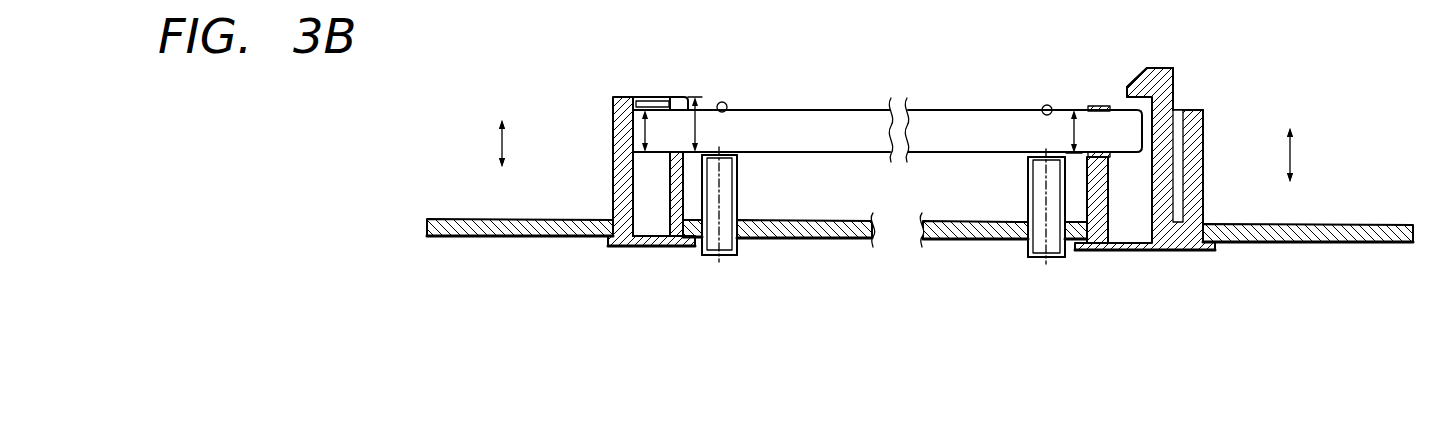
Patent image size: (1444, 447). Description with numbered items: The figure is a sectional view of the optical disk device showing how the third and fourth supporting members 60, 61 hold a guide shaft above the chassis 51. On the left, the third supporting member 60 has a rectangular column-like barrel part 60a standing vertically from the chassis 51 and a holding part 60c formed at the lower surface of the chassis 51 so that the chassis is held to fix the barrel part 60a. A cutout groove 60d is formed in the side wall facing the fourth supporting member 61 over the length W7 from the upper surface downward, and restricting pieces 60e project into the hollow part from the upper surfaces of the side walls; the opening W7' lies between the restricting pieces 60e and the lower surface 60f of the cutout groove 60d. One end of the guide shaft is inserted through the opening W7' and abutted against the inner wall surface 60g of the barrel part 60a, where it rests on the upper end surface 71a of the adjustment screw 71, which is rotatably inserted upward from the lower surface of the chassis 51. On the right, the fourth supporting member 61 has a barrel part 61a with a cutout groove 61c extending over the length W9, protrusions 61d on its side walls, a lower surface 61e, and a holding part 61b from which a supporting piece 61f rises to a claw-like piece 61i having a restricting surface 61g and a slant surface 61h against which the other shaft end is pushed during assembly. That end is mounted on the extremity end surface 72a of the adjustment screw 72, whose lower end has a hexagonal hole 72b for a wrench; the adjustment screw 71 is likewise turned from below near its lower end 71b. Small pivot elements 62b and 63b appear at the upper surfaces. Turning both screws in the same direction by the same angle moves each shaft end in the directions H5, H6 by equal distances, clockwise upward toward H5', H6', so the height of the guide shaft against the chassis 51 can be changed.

The chassis 51 is at (854, 213).
The third supporting member 60 is at (606, 140).
The barrel part 60a is at (613, 170).
The holding part 60c is at (623, 247).
The cutout groove 60d is at (683, 97).
The restricting pieces 60e is at (668, 98).
The lower surface of the cutout groove 60f is at (668, 158).
The inner wall surface 60g is at (638, 198).
The fourth supporting member 61 is at (1213, 117).
The barrel part 61a is at (1195, 200).
The holding part 61b is at (1183, 250).
The cutout groove 61c is at (1103, 106).
The protrusions 61d is at (1077, 108).
The lower surface of the cutout groove 61e is at (1106, 163).
The supporting piece 61f is at (1163, 150).
The restricting surface 61g is at (1132, 107).
The slant surface 61h is at (1151, 68).
The claw-like piece 61i is at (1175, 82).
The lever pivot pin 62b is at (728, 105).
The lever pivot pin 63b is at (1042, 106).
The adjustment screw 71 is at (746, 249).
The upper end surface 71a is at (727, 151).
The pin lower end 71b is at (715, 258).
The adjustment screw 72 is at (1021, 256).
The extremity end surface 72a is at (1035, 153).
The hexagonal hole 72b is at (1045, 262).
The length of the cutout groove W7 is at (713, 104).
The opening W7' is at (593, 111).
The length of the cutout groove W9 is at (1072, 130).
The direction of movement of the guide shaft end H5 is at (485, 143).
The upward position H5' is at (466, 110).
The direction of movement of the guide shaft end H6 is at (1308, 155).
The upward position H6' is at (1330, 126).